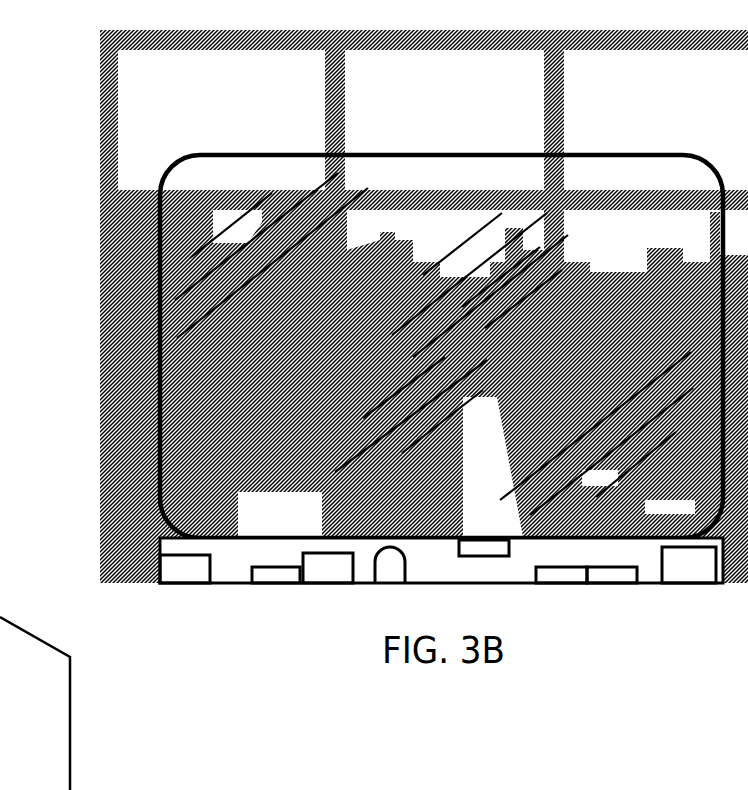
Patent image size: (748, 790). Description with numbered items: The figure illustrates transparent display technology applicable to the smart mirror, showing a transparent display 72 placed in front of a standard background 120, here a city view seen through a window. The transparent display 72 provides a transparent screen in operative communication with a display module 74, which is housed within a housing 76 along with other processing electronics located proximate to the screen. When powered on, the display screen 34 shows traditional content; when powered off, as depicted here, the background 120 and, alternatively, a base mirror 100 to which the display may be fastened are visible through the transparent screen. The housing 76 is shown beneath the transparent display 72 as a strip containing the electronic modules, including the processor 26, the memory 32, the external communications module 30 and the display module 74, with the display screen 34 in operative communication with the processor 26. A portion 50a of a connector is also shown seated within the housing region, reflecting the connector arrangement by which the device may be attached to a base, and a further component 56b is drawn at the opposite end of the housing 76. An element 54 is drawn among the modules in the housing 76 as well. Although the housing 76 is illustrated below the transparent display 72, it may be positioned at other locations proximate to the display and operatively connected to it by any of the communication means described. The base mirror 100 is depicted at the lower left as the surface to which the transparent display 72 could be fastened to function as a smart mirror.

The background 120 is at (137, 108).
The transparent display 72 is at (178, 390).
The display screen 34 is at (160, 418).
The housing 76 is at (160, 540).
The portion of the connector 50a is at (183, 568).
The memory 32 is at (272, 575).
The processor 26 is at (333, 570).
The light sensor 54 is at (390, 570).
The display module 74 is at (485, 547).
The external communications module 30 is at (609, 573).
The camera module 56b is at (690, 568).
The base mirror 100 is at (30, 703).